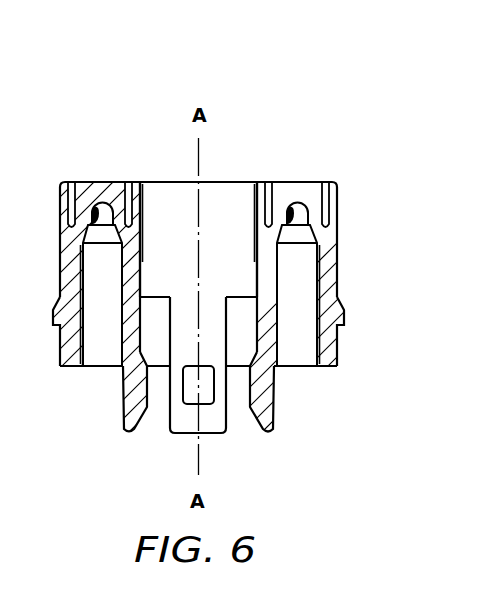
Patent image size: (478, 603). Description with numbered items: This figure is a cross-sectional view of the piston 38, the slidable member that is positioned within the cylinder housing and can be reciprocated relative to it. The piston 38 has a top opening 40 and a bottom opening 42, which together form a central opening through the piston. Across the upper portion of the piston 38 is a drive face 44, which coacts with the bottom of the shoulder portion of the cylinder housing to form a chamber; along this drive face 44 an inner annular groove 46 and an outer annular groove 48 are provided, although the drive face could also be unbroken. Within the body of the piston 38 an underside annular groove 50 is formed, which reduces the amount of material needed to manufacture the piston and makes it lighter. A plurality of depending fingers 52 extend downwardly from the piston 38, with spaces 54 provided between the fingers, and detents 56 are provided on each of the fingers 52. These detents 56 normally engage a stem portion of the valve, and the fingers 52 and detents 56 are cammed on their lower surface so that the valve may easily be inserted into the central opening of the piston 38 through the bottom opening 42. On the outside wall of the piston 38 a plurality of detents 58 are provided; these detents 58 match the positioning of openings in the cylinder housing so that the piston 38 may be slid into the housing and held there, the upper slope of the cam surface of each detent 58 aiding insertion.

The piston 38 is at (288, 94).
The top opening 40 is at (228, 200).
The bottom opening 42 is at (213, 418).
The drive face 44 is at (300, 184).
The inner annular groove 46 is at (130, 183).
The outer annular groove 48 is at (72, 183).
The underside annular groove 50 is at (106, 343).
The depending fingers 52 is at (140, 404).
The spaces 54 is at (238, 386).
The detents 56 is at (283, 371).
The detents 58 is at (55, 311).